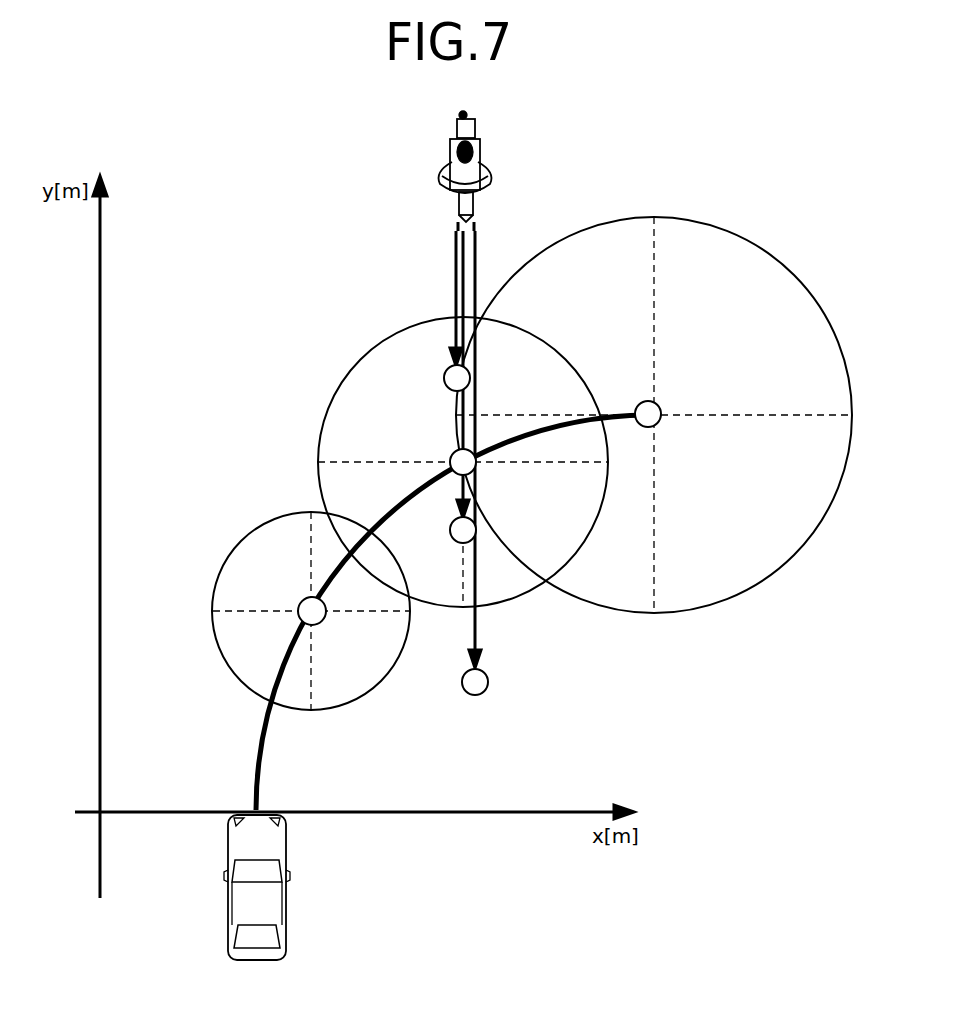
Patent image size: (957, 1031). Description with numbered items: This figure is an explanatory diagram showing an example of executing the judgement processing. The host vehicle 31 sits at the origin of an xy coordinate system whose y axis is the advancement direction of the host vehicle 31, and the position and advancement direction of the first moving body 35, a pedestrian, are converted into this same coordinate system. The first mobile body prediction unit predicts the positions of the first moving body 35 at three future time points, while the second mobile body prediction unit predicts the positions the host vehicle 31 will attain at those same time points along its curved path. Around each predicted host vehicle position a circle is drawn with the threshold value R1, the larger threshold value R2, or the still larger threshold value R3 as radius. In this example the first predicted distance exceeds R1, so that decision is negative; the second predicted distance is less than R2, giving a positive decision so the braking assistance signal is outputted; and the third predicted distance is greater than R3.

The first moving body 35 is at (456, 126).
The host vehicle 31 is at (230, 864).
The threshold value R1 is at (385, 677).
The threshold value R2 is at (574, 555).
The threshold value R3 is at (800, 549).